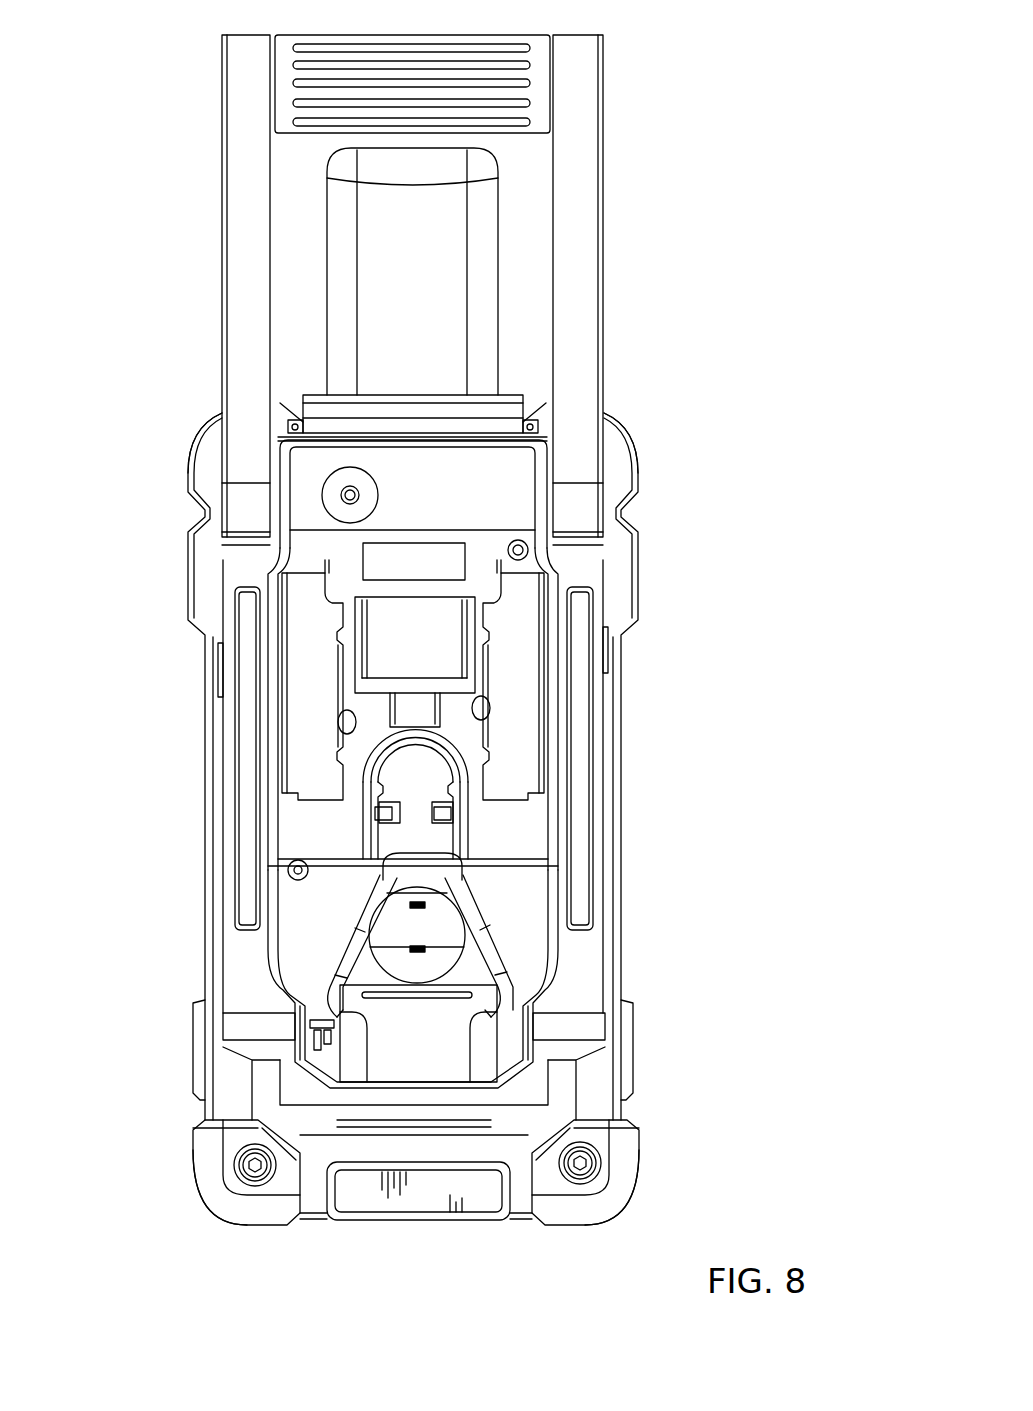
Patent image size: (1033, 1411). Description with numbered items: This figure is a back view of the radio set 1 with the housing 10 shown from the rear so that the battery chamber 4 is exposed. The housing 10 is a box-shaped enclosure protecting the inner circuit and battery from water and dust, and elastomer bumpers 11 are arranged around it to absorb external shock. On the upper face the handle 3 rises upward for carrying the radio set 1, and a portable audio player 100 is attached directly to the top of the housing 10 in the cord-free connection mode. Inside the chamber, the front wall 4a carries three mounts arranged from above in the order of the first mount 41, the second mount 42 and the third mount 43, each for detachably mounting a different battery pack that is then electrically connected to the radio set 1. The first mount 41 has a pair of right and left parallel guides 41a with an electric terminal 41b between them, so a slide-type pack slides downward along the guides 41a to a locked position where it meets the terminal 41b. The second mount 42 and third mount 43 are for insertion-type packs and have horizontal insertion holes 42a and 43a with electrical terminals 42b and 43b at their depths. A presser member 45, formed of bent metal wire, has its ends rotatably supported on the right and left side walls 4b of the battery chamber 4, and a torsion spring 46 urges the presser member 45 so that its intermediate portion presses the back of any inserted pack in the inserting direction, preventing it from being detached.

The radio set 1 is at (198, 228).
The handle 3 is at (607, 85).
The portable audio player 100 is at (510, 252).
The housing 10 is at (193, 426).
The elastomer bumpers 11 is at (190, 478).
The battery chamber 4 is at (262, 760).
The front wall 4a is at (468, 737).
The side walls 4b is at (517, 983).
The first mount 41 is at (299, 652).
The guides 41a is at (339, 720).
The electric terminal 41b is at (357, 627).
The second mount 42 is at (338, 822).
The insertion hole 42a is at (469, 775).
The electrical terminal 42b is at (443, 818).
The third mount 43 is at (436, 978).
The insertion hole 43a is at (458, 917).
The electrical terminal 43b is at (388, 930).
The presser member 45 is at (345, 868).
The torsion spring 46 is at (312, 1042).